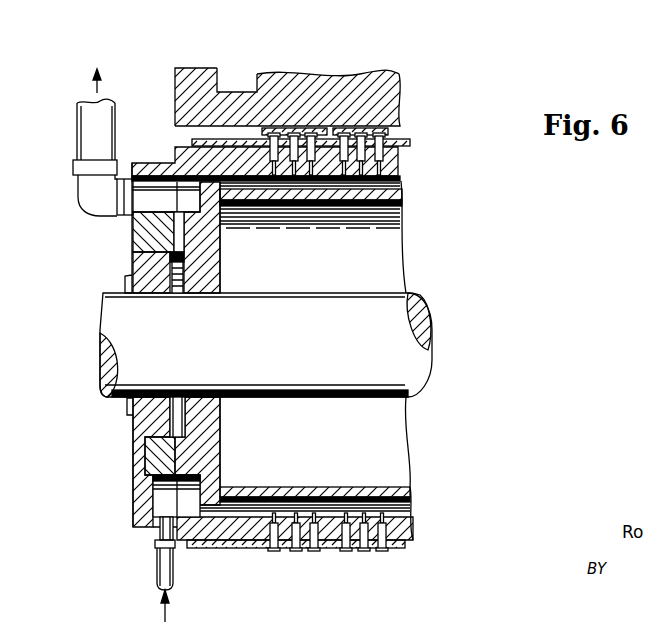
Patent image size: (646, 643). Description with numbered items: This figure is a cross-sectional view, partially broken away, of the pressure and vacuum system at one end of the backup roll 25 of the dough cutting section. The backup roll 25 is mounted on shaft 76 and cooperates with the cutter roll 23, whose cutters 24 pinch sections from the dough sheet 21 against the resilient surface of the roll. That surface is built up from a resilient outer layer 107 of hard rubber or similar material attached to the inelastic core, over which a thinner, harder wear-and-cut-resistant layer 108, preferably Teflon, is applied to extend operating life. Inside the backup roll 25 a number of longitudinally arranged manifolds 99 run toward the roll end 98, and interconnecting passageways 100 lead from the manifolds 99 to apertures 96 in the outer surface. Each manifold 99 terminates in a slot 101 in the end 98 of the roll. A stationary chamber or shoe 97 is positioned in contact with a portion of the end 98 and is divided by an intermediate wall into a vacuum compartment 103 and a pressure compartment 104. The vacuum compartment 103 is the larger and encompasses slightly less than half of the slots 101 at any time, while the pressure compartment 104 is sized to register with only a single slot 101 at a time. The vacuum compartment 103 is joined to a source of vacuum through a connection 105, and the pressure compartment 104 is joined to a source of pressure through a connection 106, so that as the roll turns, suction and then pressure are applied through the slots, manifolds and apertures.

The dough sheet 21 is at (247, 126).
The cutter roll 23 is at (390, 104).
The wear-and-cut-resistant layer 108 is at (203, 126).
The cutters 24 is at (350, 128).
The resilient outer layer 107 is at (192, 142).
The apertures 96 is at (383, 158).
The interconnecting passageways 100 is at (398, 173).
The manifolds 99 is at (401, 185).
The backup roll 25 is at (389, 241).
The shaft 76 is at (376, 348).
The slot 101 is at (180, 204).
The vacuum compartment 103 is at (156, 201).
The end of roll 98 is at (171, 251).
The stationary chamber or shoe 97 is at (142, 424).
The pressure compartment 104 is at (166, 504).
The connection 105 is at (90, 198).
The connection 106 is at (161, 532).